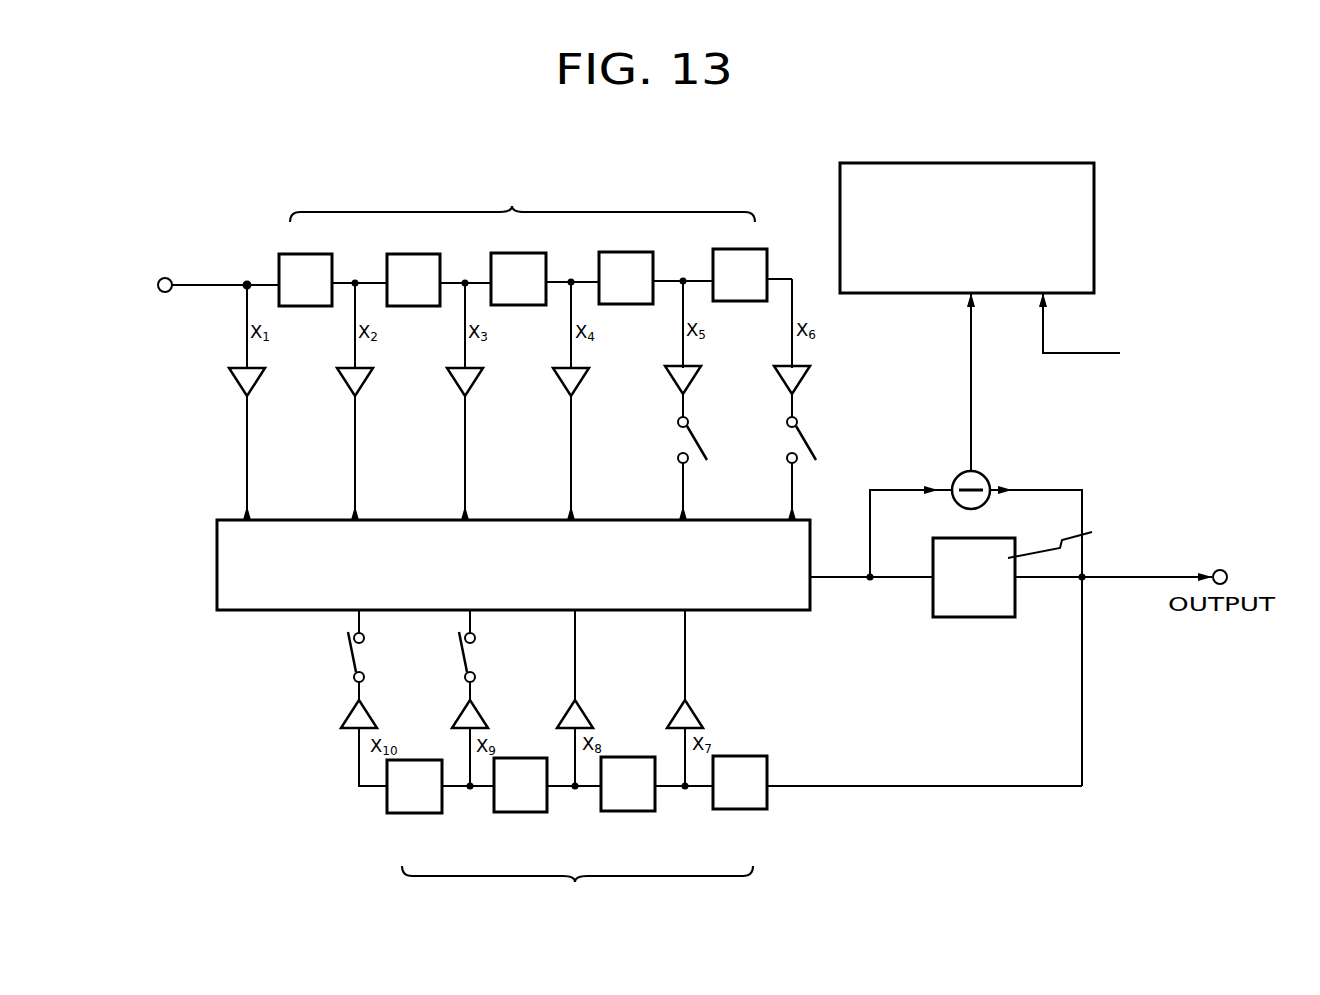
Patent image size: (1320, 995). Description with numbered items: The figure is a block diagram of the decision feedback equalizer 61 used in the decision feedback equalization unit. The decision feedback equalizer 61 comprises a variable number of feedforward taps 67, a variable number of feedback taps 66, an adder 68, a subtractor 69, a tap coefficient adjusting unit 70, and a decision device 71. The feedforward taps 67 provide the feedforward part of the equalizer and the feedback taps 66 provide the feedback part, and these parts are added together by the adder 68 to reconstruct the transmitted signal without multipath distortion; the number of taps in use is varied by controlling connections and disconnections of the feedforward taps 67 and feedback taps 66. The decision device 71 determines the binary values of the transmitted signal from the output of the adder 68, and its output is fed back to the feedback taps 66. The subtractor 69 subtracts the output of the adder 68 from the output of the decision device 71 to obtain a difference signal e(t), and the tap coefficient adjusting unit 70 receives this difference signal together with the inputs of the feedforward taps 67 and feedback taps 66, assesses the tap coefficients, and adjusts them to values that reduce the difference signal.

The decision feedback equalizer 61 is at (262, 212).
The feedback taps 66 is at (734, 838).
The feedforward taps 67 is at (535, 242).
The adder 68 is at (217, 566).
The subtractor 69 is at (985, 474).
The tap coefficient adjusting unit 70 is at (1094, 183).
The decision device 71 is at (975, 618).